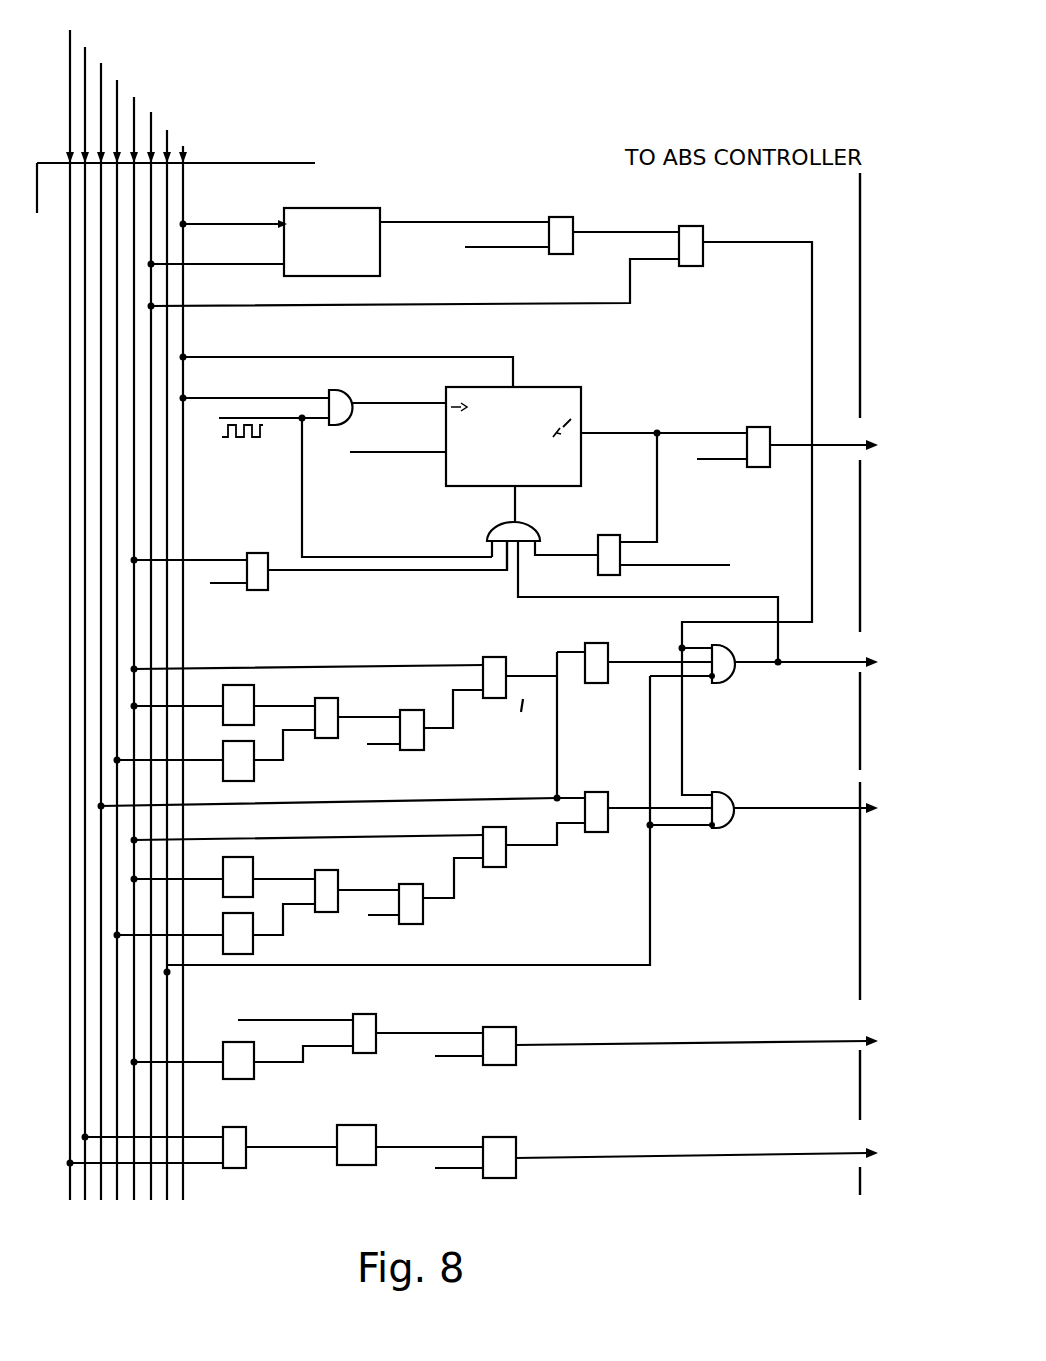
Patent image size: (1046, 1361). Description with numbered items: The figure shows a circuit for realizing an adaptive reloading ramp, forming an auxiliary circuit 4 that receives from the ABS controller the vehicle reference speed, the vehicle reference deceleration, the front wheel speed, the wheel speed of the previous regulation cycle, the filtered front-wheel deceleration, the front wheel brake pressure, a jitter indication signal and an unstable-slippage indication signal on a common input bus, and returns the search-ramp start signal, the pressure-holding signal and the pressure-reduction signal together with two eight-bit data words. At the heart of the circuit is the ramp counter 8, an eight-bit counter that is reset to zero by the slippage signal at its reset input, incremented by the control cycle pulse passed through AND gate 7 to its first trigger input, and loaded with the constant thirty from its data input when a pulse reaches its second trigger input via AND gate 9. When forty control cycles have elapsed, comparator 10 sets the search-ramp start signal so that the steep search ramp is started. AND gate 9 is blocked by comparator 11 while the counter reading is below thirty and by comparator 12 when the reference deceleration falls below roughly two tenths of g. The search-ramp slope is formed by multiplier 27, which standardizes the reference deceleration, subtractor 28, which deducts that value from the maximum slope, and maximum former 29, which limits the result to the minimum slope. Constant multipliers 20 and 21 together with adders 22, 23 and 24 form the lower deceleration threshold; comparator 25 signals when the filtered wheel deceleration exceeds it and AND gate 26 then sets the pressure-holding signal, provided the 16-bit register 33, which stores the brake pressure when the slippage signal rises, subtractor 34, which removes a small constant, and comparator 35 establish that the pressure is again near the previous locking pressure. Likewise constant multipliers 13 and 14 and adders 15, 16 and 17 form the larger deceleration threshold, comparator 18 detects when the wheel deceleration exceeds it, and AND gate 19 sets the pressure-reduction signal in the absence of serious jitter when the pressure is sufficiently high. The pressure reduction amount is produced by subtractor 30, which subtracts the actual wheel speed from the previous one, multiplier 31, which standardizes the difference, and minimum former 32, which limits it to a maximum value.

The auxiliary circuit 4 is at (176, 606).
The AND gate 7 is at (337, 464).
The ramp counter 8 is at (465, 439).
The AND gate 9 is at (624, 592).
The comparator 10 is at (679, 503).
The comparator 11 is at (796, 454).
The comparator 12 is at (320, 570).
The constant multiplier 13 is at (224, 703).
The constant multiplier 14 is at (216, 755).
The adder 15 is at (356, 708).
The adder 16 is at (429, 729).
The adder 17 is at (345, 718).
The comparator 18 is at (634, 654).
The AND gate 19 is at (526, 795).
The constant multiplier 20 is at (224, 874).
The constant multiplier 21 is at (216, 929).
The adder 22 is at (356, 882).
The adder 23 is at (430, 898).
The adder 24 is at (359, 838).
The comparator 25 is at (406, 803).
The AND gate 26 is at (766, 800).
The multiplier 27 is at (243, 1057).
The subtractor 28 is at (360, 1025).
The maximum former 29 is at (656, 1041).
The subtractor 30 is at (203, 1137).
The multiplier 31 is at (410, 1136).
The minimum former 32 is at (656, 1155).
The 16-bit register 33 is at (350, 248).
The subtractor 34 is at (559, 238).
The comparator 35 is at (481, 501).